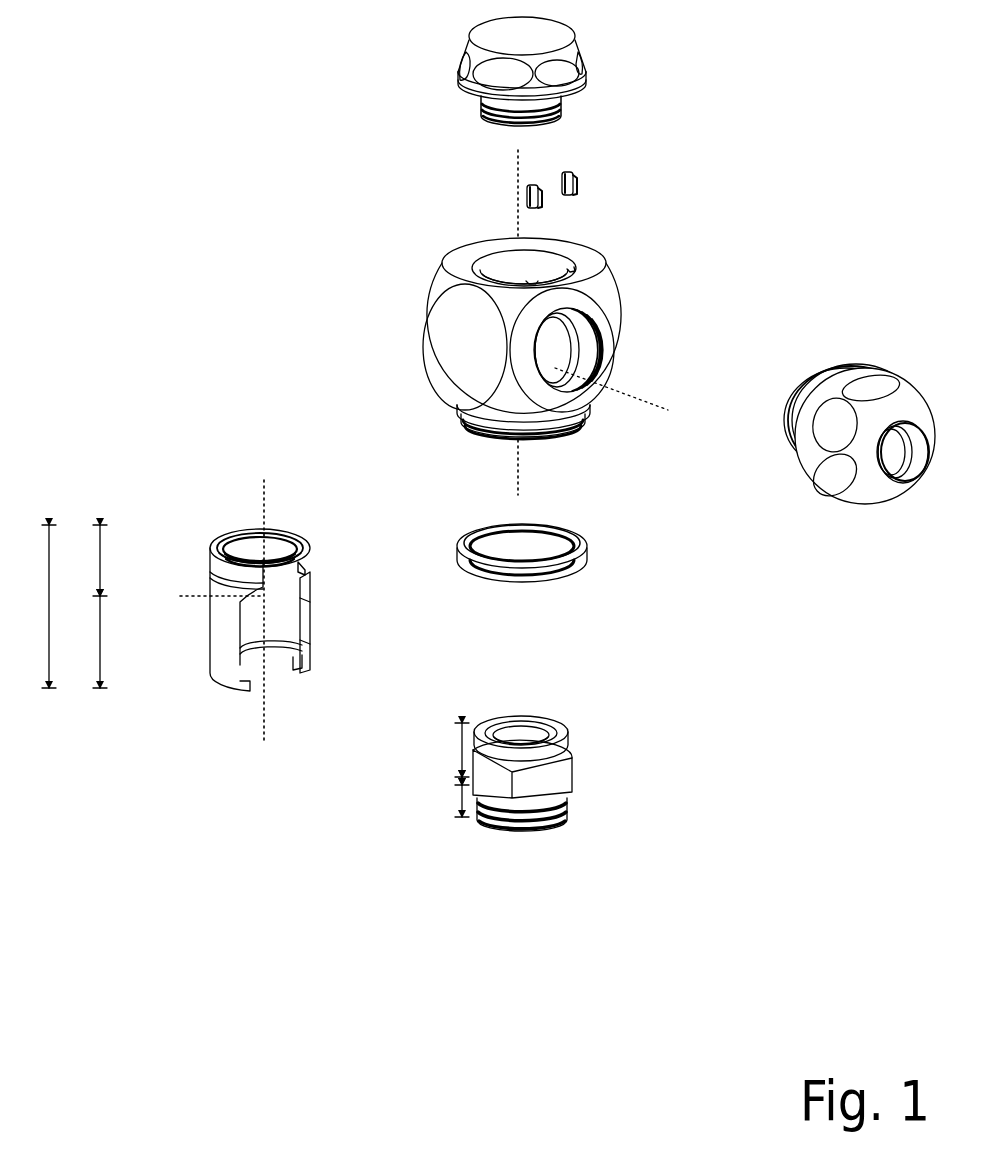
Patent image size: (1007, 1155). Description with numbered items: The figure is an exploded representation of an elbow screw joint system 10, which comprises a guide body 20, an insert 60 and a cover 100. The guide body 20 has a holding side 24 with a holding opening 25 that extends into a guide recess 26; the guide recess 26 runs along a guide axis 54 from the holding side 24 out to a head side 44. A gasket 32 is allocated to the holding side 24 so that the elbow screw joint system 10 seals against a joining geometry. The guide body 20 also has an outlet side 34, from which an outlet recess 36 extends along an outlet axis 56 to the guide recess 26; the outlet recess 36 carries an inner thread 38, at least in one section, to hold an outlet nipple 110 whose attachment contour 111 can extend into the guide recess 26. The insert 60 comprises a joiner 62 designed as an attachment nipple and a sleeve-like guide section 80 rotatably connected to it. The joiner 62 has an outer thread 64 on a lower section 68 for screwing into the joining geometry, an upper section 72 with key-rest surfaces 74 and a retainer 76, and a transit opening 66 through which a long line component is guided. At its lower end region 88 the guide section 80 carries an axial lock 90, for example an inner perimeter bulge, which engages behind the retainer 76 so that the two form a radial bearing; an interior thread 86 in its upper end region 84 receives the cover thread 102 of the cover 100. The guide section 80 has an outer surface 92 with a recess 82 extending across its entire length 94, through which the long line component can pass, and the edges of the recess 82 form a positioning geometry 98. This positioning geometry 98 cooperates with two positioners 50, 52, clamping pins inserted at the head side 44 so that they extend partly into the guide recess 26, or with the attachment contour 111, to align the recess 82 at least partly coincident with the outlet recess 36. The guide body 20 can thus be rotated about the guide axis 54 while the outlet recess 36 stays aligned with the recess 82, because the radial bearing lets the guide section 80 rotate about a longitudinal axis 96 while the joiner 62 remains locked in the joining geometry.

The elbow screw joint system 10 is at (230, 132).
The cover 100 is at (612, 79).
The cover thread 102 is at (500, 112).
The positioner 50 is at (576, 182).
The positioner 52 is at (542, 200).
The guide body 20 is at (637, 274).
The head side 44 is at (468, 250).
The guide recess 26 is at (512, 272).
The inner thread 38 is at (572, 340).
The outlet side 34 is at (614, 327).
The outlet recess 36 is at (556, 350).
The outlet axis 56 is at (628, 395).
The holding side 24 is at (456, 420).
The guide axis 54 is at (458, 450).
The holding opening 25 is at (545, 458).
The gasket 32 is at (585, 548).
The outlet nipple 110 is at (812, 492).
The attachment contour 111 is at (801, 378).
The guide section 80 is at (216, 500).
The interior thread 86 is at (222, 545).
The outer surface 92 is at (216, 610).
The recess 82 is at (287, 622).
The positioning geometry 98 is at (265, 578).
The axial lock 90 is at (300, 658).
The longitudinal axis 96 is at (264, 710).
The entire length 94 is at (37, 606).
The upper end region 84 is at (87, 560).
The lower end region 88 is at (87, 642).
The insert 60 is at (478, 716).
The joiner 62 is at (608, 740).
The transit opening 66 is at (525, 738).
The retainer 76 is at (537, 753).
The outer thread 64 is at (547, 815).
The upper section 72 is at (468, 745).
The key-rest surfaces 74 is at (490, 775).
The lower section 68 is at (458, 808).